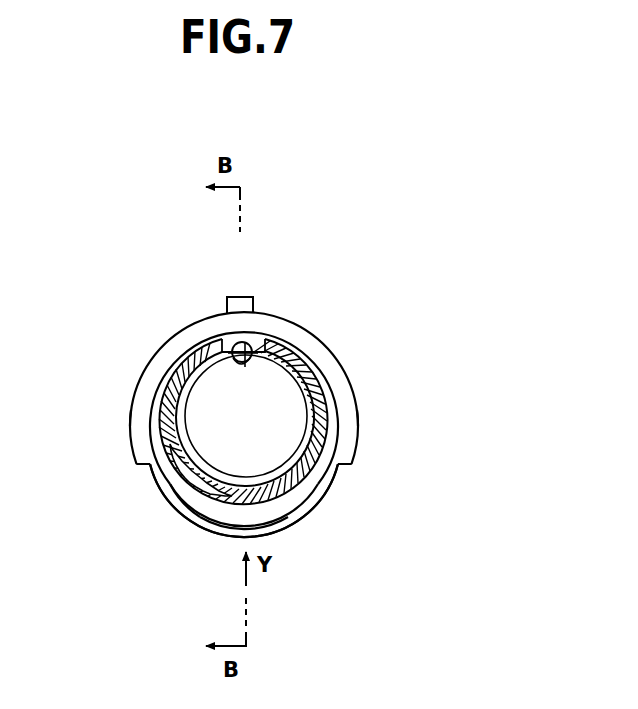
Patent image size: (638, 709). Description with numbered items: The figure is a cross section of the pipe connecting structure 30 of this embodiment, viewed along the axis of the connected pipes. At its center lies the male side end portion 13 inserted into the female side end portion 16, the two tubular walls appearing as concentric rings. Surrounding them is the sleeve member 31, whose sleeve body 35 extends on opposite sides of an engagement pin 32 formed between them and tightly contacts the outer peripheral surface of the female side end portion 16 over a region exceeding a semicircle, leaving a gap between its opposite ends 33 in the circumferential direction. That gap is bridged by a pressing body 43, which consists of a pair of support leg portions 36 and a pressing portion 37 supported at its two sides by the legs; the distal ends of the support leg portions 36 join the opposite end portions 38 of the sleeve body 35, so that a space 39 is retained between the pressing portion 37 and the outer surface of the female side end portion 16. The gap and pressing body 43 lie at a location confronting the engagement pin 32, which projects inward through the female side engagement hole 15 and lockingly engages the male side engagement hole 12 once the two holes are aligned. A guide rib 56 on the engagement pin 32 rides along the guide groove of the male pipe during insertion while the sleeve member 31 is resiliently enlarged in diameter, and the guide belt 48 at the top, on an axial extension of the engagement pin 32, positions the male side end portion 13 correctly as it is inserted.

The pipe connecting structure 30 is at (357, 278).
The sleeve member 31 is at (191, 311).
The sleeve body 35 is at (152, 350).
The guide belt 48 is at (238, 297).
The opposite end portions 38 is at (358, 422).
The opposite ends 33 is at (338, 463).
The support leg portions 36 is at (333, 477).
The pressing portion 37 is at (220, 523).
The pressing body 43 is at (190, 512).
The female side end portion 16 is at (320, 368).
The male side end portion 13 is at (323, 390).
The space 39 is at (202, 500).
The female side engagement hole 15 is at (255, 337).
The male side engagement hole 12 is at (256, 358).
The engagement pin 32 is at (226, 355).
The guide rib 56 is at (244, 368).